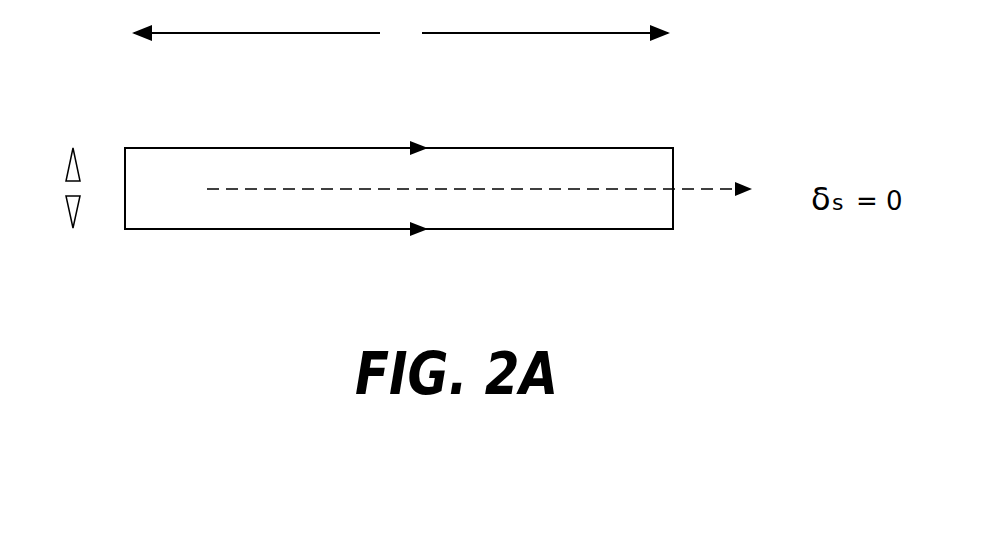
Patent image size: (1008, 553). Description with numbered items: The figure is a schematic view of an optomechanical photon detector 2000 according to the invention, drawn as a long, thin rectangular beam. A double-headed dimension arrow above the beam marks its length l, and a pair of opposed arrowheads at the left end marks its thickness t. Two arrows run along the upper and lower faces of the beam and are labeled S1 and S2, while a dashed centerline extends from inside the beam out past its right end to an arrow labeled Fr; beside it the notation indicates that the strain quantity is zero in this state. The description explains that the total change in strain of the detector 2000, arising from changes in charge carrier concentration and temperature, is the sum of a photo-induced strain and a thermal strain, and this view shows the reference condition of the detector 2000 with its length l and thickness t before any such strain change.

The optomechanical photon detector 2000 is at (210, 148).
The length l is at (401, 33).
The thickness t is at (63, 188).
The resultant force Fr is at (494, 171).
The first surface S1 is at (399, 129).
The second surface S2 is at (399, 256).